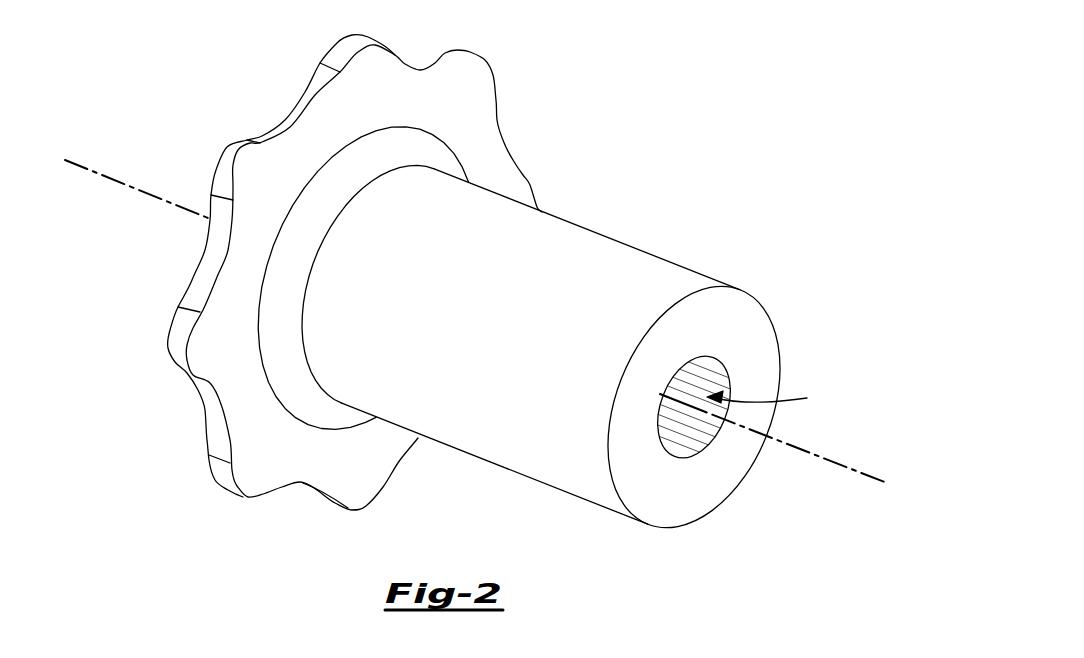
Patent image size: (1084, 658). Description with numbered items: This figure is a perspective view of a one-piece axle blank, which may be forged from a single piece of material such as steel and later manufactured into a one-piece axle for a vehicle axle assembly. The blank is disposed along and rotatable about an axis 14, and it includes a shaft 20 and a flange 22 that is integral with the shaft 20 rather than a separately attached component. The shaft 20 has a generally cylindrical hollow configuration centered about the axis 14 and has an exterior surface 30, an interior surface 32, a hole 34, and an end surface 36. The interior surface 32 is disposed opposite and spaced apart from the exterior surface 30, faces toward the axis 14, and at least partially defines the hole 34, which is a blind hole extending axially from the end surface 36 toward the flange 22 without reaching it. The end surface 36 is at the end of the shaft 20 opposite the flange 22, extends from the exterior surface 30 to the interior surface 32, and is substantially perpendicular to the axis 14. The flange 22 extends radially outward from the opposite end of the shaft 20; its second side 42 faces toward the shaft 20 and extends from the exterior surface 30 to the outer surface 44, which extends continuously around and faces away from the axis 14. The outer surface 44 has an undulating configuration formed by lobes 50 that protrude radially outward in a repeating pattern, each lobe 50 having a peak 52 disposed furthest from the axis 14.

The axis 14 is at (853, 467).
The shaft 20 is at (583, 223).
The flange 22 is at (417, 63).
The exterior surface 30 is at (633, 268).
The interior surface 32 is at (688, 437).
The hole 34 is at (773, 398).
The end surface 36 is at (752, 357).
The second side 42 is at (470, 110).
The outer surface 44 is at (295, 113).
The lobes 50 is at (230, 162).
The peak 52 is at (227, 483).